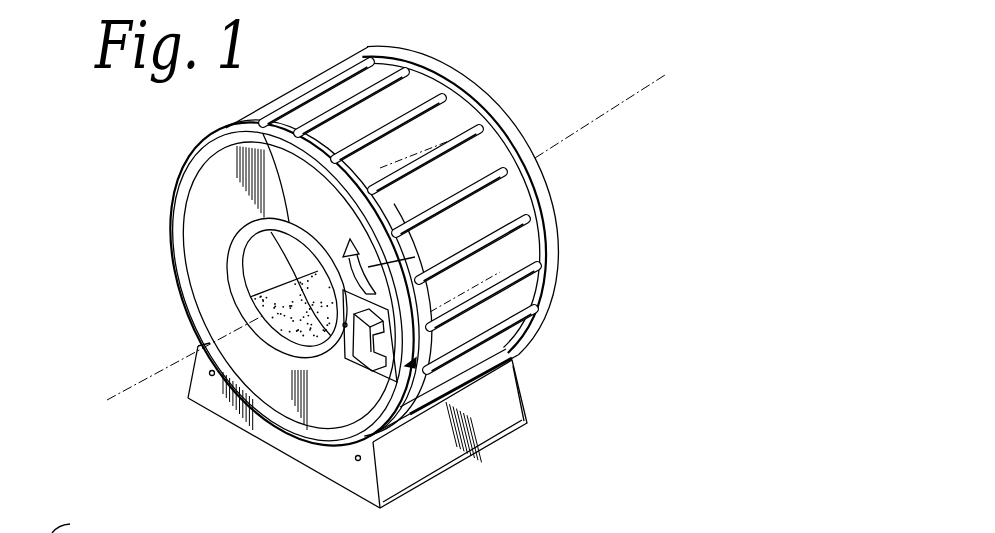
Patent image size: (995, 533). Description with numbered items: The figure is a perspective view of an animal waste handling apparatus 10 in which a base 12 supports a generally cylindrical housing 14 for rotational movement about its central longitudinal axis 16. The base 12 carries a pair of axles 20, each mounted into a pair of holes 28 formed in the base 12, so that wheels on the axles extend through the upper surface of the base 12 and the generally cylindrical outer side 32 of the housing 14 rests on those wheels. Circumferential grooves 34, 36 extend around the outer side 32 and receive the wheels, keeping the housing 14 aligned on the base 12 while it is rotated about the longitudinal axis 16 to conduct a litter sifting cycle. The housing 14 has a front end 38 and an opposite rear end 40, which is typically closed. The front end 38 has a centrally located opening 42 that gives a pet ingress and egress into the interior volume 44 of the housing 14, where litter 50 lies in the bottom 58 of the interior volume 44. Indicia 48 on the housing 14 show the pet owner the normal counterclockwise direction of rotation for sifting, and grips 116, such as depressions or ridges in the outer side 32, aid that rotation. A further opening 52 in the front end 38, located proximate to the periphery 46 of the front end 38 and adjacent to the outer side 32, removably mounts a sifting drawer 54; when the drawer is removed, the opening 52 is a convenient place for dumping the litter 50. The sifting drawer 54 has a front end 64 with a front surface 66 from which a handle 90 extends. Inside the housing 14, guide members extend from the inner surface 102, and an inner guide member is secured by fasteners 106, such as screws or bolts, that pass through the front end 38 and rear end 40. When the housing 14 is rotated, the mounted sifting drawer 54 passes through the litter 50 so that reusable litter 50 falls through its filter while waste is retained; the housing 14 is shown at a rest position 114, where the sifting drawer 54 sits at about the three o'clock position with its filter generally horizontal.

The apparatus 10 is at (556, 41).
The base 12 is at (530, 421).
The cylindrical housing 14 is at (207, 180).
The central longitudinal axis 16 is at (157, 371).
The axles 20 is at (198, 346).
The holes 28 is at (352, 463).
The cylindrical outer side 32 is at (503, 190).
The groove 34 is at (250, 124).
The groove 36 is at (442, 98).
The front end 38 is at (186, 230).
The rear end 40 is at (447, 63).
The centrally located opening 42 is at (258, 258).
The interior volume 44 is at (265, 249).
The periphery 46 is at (457, 448).
The indicia 48 is at (510, 203).
The litter 50 is at (247, 299).
The opening 52 is at (395, 430).
The sifting drawer 54 is at (445, 310).
The bottom 58 is at (207, 377).
The front end 64 is at (383, 376).
The front surface 66 is at (392, 346).
The handle 90 is at (467, 389).
The inner surface 102 is at (256, 297).
The fasteners 106 is at (255, 157).
The rest position 114 is at (412, 363).
The grips 116 is at (517, 123).